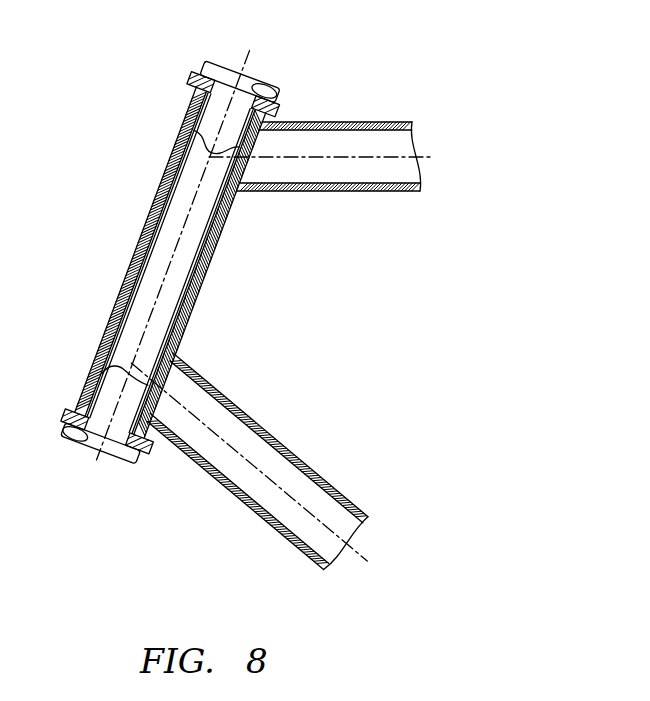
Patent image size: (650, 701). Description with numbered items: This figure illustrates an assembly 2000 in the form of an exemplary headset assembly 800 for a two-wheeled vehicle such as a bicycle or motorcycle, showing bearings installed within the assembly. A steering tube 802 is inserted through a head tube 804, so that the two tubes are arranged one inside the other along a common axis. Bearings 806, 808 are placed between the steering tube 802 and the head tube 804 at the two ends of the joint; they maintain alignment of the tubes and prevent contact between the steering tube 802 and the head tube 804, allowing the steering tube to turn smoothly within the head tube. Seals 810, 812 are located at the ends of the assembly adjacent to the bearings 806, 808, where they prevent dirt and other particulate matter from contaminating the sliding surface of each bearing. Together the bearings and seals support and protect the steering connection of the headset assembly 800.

The assembly 2000 is at (256, 294).
The headset assembly 800 is at (441, 144).
The steering tube 802 is at (258, 76).
The head tube 804 is at (168, 166).
The bearing 806 is at (194, 75).
The bearing 808 is at (87, 386).
The seal 810 is at (279, 104).
The seal 812 is at (140, 462).